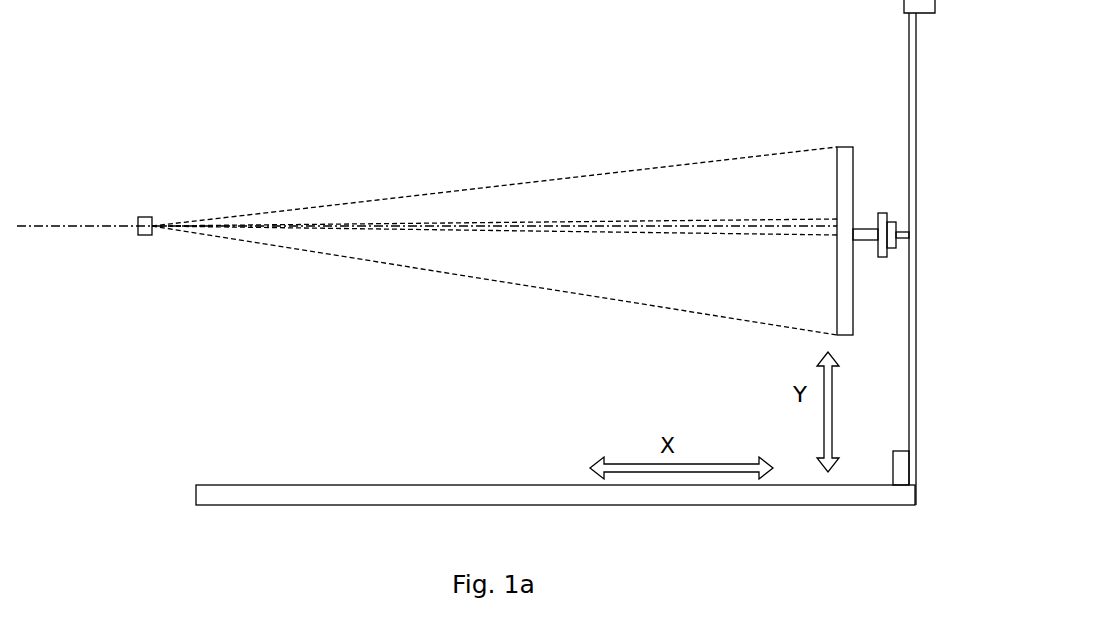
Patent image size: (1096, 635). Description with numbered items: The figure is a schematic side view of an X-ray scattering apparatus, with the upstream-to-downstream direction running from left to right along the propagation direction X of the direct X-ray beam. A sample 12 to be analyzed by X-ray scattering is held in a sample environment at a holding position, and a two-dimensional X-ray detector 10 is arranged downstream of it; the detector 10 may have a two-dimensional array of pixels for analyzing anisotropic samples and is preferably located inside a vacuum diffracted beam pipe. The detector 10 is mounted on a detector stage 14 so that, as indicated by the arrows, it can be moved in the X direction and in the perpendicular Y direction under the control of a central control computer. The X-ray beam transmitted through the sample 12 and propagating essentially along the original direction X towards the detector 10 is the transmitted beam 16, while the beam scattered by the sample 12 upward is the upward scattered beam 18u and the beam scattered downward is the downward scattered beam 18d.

The two-dimensional X-ray detector 10 is at (848, 162).
The sample 12 is at (143, 216).
The detector stage 14 is at (908, 100).
The transmitted X-ray beam 16 is at (727, 224).
The upward scattered X-ray beam 18u is at (585, 175).
The downward scattered X-ray beam 18d is at (505, 283).